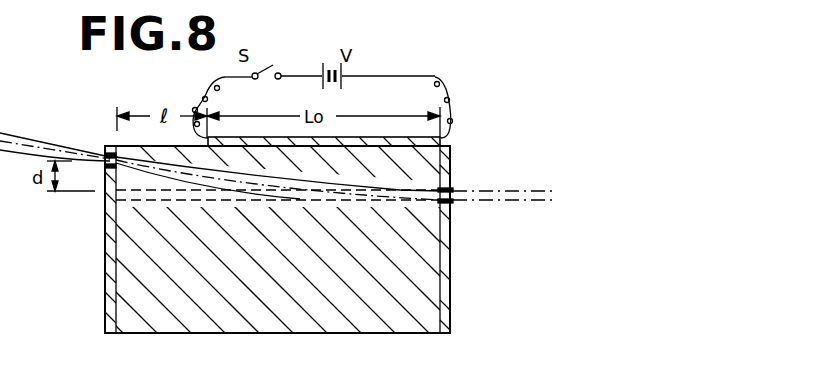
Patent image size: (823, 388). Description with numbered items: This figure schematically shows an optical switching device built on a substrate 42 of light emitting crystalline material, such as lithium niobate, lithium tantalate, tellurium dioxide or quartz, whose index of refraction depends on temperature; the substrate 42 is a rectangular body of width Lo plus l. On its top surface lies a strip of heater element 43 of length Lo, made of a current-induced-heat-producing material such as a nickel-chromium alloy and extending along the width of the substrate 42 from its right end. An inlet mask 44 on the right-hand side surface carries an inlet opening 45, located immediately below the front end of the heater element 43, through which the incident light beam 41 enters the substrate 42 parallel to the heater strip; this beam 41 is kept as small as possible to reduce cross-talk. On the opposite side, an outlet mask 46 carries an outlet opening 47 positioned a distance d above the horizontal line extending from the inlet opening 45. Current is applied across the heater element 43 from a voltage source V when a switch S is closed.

The incident light beam 41 is at (535, 192).
The substrate 42 is at (368, 334).
The heater element 43 is at (400, 137).
The inlet mask 44 is at (447, 263).
The inlet opening 45 is at (446, 191).
The outlet mask 46 is at (106, 252).
The outlet opening 47 is at (106, 157).